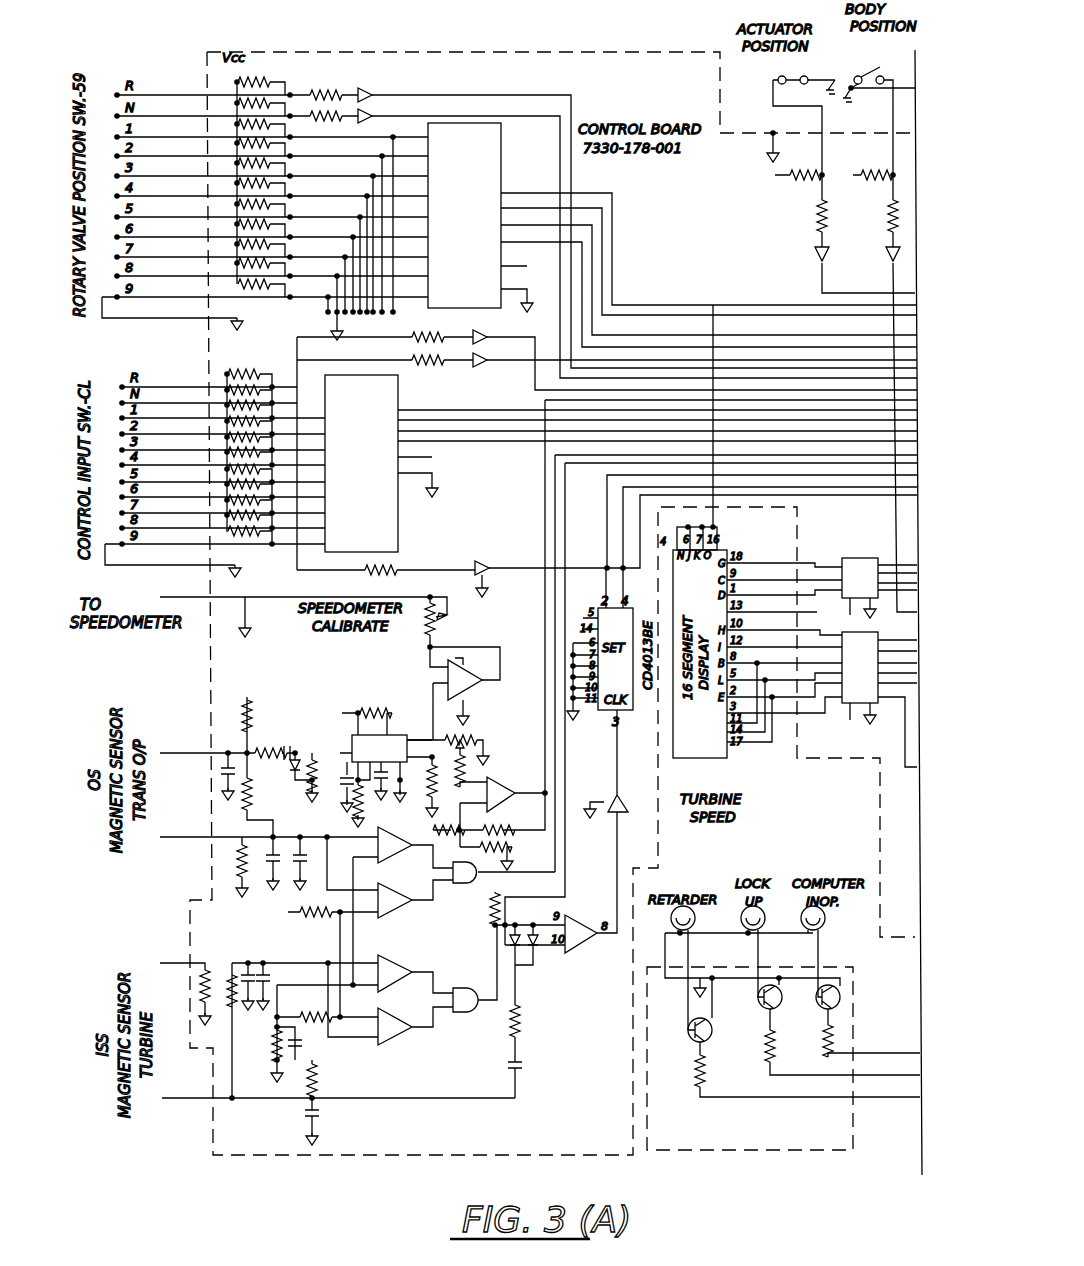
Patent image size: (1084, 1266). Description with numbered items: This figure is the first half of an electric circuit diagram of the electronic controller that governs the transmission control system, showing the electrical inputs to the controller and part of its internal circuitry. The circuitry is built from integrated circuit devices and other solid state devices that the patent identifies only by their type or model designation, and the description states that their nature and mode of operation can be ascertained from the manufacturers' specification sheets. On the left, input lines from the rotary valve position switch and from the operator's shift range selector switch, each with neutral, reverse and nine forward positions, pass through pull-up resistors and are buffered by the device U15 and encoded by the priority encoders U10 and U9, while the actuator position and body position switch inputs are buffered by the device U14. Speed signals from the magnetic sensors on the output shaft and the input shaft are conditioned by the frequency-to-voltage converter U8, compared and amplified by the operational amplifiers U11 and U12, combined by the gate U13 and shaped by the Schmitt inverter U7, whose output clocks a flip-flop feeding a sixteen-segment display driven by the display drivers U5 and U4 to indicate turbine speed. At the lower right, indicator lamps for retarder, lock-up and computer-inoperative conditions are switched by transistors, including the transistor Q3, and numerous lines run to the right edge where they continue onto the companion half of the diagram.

The 74C904 buffer U15 is at (603, 214).
The 74147N priority encoder U10 is at (660, 235).
The 74147 priority encoder U9 is at (610, 463).
The 74C904 buffer U14 is at (829, 339).
The LM324 operational amplifier U11 is at (477, 758).
The 2917 frequency to voltage converter U8 is at (388, 767).
The LM324 operational amplifier U12 is at (370, 914).
The 74C08 AND gate U13 is at (470, 973).
The 74C14 Schmitt inverter U7 is at (603, 782).
The 75492 display driver U5 is at (871, 569).
The 75492 display driver U4 is at (871, 697).
The 2N1711 transistor Q3 is at (680, 1032).